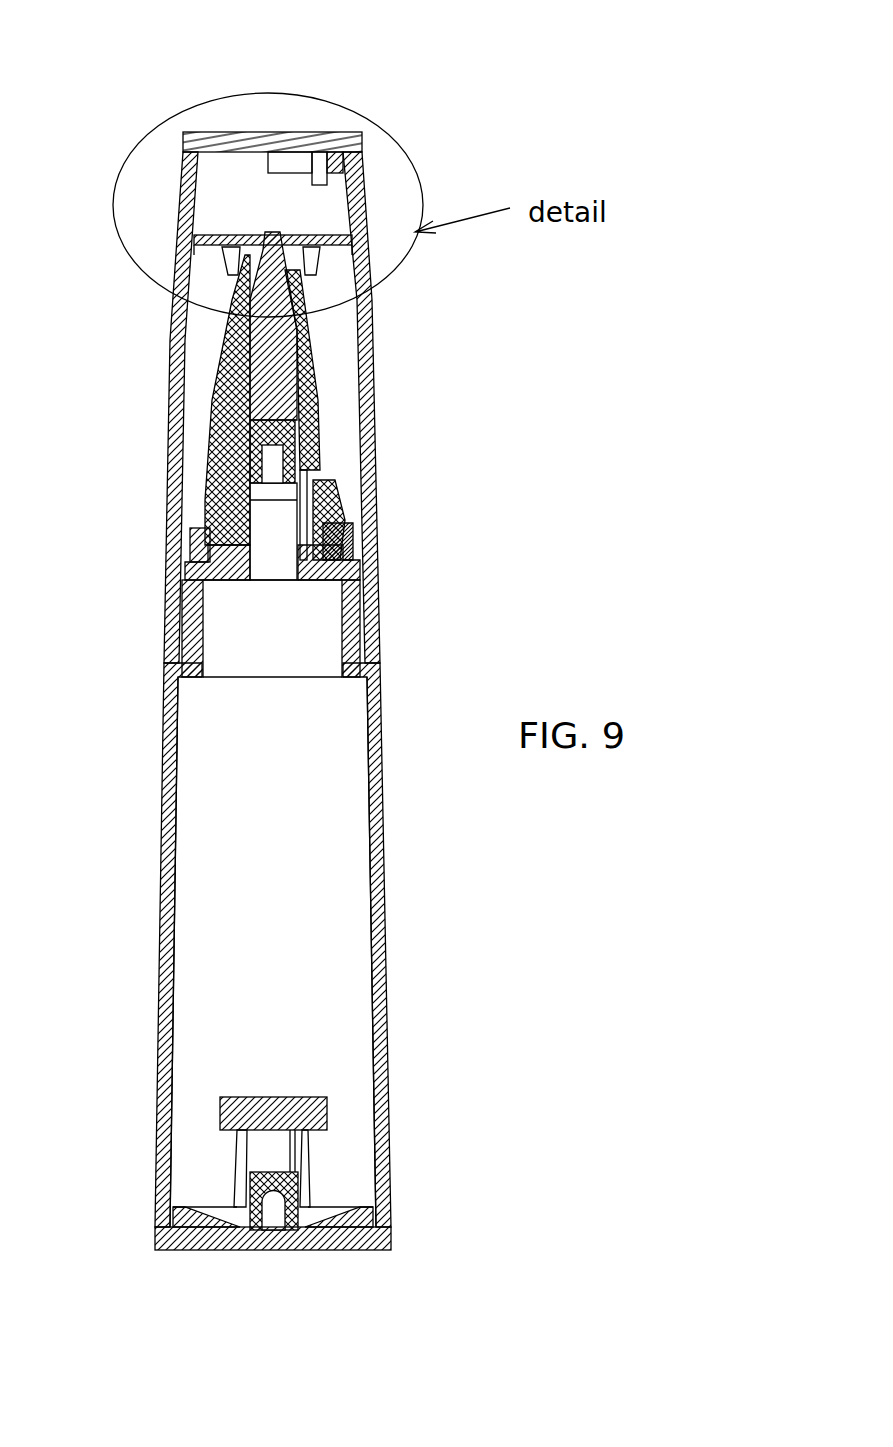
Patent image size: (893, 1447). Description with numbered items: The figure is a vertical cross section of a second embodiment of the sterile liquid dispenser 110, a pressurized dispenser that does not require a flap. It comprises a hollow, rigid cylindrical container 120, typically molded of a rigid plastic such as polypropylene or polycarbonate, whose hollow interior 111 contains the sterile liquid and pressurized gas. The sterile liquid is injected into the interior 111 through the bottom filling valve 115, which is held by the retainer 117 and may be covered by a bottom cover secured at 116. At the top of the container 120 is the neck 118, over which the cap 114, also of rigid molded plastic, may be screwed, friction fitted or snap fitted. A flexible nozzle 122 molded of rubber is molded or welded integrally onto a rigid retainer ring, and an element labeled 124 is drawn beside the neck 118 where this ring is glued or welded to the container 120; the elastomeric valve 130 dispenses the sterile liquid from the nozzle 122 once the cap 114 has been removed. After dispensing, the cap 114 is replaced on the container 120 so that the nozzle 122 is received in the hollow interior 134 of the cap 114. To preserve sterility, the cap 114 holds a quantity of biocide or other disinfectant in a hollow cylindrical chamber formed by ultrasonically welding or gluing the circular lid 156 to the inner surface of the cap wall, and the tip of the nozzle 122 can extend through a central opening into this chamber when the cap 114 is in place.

The sterile liquid dispenser 110 is at (133, 1053).
The hollow interior 111 is at (198, 858).
The cap 114 is at (383, 177).
The bottom filling valve 115 is at (320, 1212).
The bottom cover 116 is at (366, 1271).
The retainer 117 is at (351, 1122).
The neck 118 is at (177, 627).
The cylindrical container 120 is at (163, 780).
The flexible nozzle 122 is at (334, 310).
The seal 124 is at (383, 512).
The elastomeric valve 130 is at (320, 433).
The hollow interior of cap 134 is at (197, 360).
The circular lid 156 is at (329, 112).